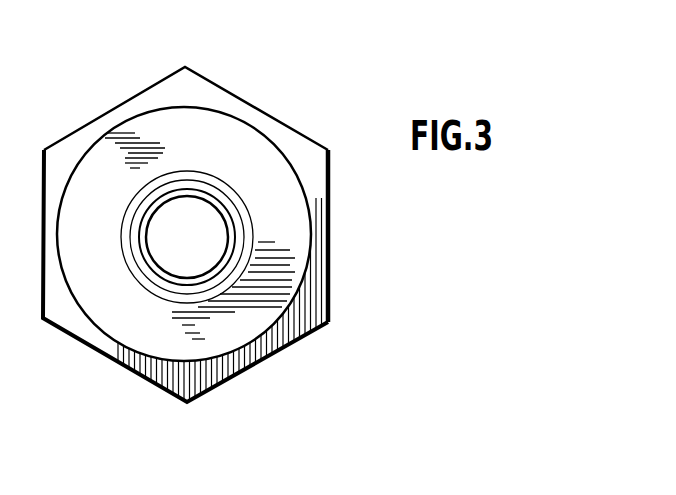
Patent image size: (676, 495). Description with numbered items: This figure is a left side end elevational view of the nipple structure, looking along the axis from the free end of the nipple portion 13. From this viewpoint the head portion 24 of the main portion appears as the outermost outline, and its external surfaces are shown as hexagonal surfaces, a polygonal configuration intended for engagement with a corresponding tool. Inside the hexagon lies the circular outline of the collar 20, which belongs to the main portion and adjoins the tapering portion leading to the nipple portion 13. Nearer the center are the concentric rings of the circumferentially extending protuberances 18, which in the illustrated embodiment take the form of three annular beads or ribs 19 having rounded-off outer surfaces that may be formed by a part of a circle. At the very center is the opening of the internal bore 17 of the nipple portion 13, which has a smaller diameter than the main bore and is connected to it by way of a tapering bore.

The nipple portion 13 is at (243, 232).
The internal bore 17 is at (155, 210).
The circumferentially extending protuberances 18 is at (124, 226).
The annular beads or ribs 19 is at (130, 200).
The collar 20 is at (63, 268).
The head portion 24 is at (276, 119).